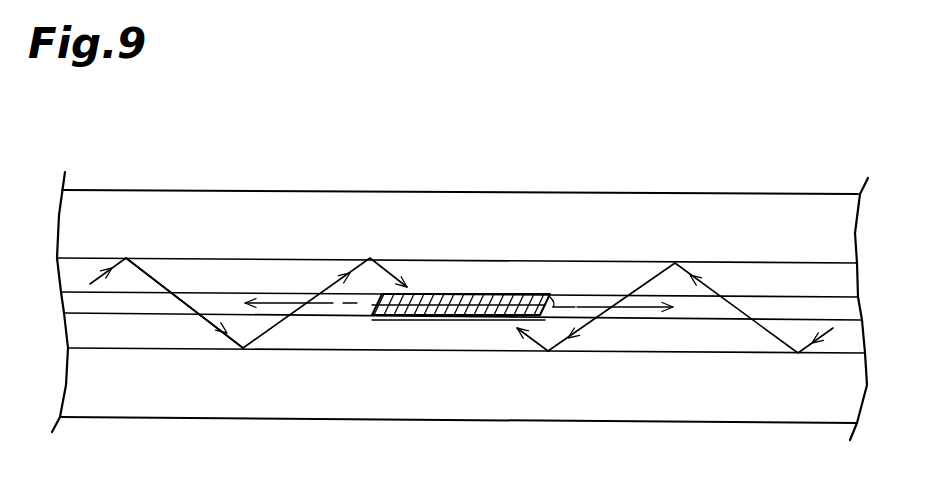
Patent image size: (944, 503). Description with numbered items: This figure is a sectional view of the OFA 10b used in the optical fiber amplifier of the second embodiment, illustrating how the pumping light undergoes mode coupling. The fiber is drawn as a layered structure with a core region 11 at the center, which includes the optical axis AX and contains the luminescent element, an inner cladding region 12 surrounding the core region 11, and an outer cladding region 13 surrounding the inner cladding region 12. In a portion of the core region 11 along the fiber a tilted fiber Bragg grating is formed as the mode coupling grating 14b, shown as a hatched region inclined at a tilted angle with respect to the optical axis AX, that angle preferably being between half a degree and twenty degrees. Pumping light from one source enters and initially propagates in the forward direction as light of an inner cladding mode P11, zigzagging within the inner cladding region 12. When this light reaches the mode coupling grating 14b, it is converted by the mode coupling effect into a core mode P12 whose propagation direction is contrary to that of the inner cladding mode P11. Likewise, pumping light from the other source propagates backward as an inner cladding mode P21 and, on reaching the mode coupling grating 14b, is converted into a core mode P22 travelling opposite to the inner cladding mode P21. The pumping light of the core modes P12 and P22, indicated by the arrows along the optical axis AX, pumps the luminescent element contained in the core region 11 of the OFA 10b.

The OFA 10b is at (522, 160).
The core region 11 is at (77, 303).
The inner cladding region 12 is at (182, 277).
The outer cladding region 13 is at (270, 210).
The mode coupling grating 14b is at (460, 320).
The inner cladding mode P11 is at (337, 277).
The core mode P12 is at (313, 310).
The inner cladding mode P21 is at (589, 303).
The core mode P22 is at (589, 303).
The optical axis AX is at (362, 310).